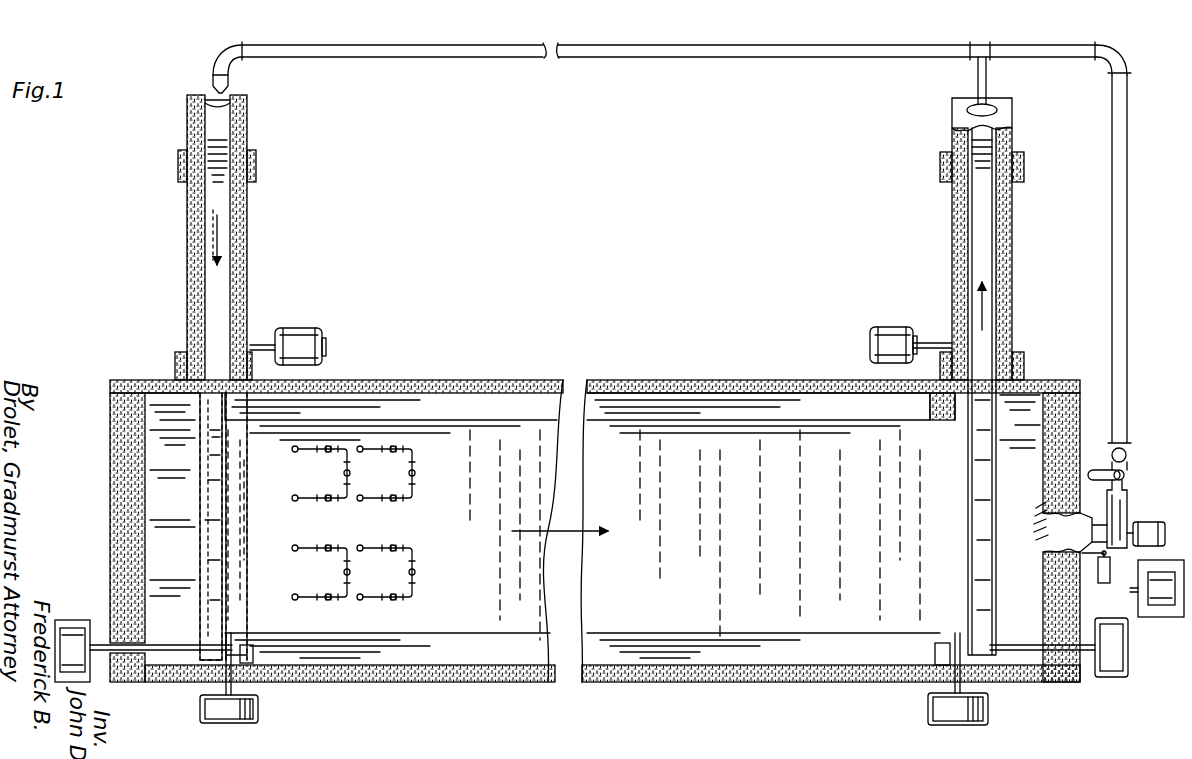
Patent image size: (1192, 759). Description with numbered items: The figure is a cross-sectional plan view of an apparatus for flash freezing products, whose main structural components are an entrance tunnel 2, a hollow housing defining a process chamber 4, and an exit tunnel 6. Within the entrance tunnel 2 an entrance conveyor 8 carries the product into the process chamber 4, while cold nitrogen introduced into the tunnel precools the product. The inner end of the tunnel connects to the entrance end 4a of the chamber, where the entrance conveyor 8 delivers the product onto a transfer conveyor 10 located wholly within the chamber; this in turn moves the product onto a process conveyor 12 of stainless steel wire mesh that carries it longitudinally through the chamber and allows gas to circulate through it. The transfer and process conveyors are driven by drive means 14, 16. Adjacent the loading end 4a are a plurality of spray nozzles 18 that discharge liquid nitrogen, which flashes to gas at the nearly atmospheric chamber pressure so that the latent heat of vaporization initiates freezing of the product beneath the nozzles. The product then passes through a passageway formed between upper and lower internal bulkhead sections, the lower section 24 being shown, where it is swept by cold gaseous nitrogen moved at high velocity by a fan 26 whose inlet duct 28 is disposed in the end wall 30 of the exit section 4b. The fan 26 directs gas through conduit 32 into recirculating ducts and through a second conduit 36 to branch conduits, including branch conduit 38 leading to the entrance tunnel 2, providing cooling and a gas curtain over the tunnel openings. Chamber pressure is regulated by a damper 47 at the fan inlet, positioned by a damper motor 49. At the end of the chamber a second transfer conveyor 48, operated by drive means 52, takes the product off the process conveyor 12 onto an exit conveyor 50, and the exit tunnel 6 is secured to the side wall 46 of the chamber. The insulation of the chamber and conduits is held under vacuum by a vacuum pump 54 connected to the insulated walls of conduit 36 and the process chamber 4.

The entrance tunnel 2 is at (189, 237).
The process chamber 4 is at (359, 554).
The entrance end of process chamber 4a is at (340, 682).
The exit section of process chamber 4b is at (1025, 660).
The exit tunnel 6 is at (950, 252).
The entrance conveyor 8 is at (205, 135).
The transfer conveyor 10 is at (207, 415).
The process conveyor 12 is at (530, 628).
The drive means 14 is at (72, 628).
The drive means 16 is at (258, 713).
The spray nozzles 18 is at (312, 500).
The lower internal bulk head section 24 is at (705, 548).
The fan 26 is at (1127, 500).
The inlet duct 28 is at (1098, 518).
The end wall 30 is at (1085, 400).
The conduit 32 is at (1104, 468).
The second conduit 36 is at (538, 60).
The branch conduit 38 is at (213, 80).
The side wall 46 is at (748, 366).
The damper 47 is at (1035, 522).
The second transfer conveyor 48 is at (978, 448).
The damper motor 49 is at (1110, 570).
The exit conveyor 50 is at (1010, 258).
The drive means 52 is at (1112, 675).
The vacuum pump 54 is at (1163, 607).